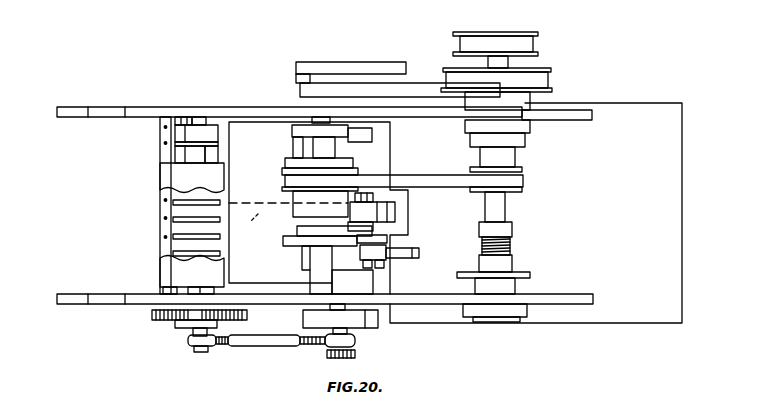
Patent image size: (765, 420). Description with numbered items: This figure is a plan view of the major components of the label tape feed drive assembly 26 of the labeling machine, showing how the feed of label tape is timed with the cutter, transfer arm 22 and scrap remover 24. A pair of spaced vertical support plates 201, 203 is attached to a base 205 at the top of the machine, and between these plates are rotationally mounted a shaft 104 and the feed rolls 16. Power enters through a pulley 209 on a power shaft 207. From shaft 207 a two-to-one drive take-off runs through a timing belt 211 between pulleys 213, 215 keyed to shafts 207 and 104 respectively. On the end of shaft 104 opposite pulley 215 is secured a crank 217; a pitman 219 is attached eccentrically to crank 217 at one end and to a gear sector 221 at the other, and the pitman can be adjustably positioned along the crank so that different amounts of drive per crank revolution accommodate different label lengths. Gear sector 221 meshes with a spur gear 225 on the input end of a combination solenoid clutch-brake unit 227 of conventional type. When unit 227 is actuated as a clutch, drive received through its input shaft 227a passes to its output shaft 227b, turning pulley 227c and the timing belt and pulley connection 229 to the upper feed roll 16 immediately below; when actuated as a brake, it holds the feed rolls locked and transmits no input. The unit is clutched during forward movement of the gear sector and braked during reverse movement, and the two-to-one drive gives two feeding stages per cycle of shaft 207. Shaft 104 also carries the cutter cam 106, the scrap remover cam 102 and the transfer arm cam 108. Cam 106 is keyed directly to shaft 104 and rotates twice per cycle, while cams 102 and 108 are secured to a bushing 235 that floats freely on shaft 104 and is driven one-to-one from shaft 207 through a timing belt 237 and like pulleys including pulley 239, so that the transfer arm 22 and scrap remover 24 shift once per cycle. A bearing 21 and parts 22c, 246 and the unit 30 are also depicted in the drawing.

The apparatus 26 is at (235, 7).
The vertical support plate 201 is at (166, 78).
The vertical support plate 203 is at (134, 305).
The base 205 is at (660, 137).
The power shaft 207 is at (500, 62).
The pulley 209 is at (530, 31).
The timing belt 211 is at (416, 48).
The pulley 213 is at (552, 70).
The pulley 215 is at (302, 45).
The crank 217 is at (357, 323).
The pitman 219 is at (283, 343).
The gear sector 221 is at (162, 320).
The spur gear 225 is at (205, 334).
The combination solenoid clutch-brake unit 227 is at (172, 162).
The input shaft 227a is at (208, 280).
The output shaft 227b is at (196, 118).
The pulley 227c is at (181, 118).
The timing belt and pulley connection 229 is at (186, 134).
The feed roll 16 is at (190, 154).
The carriage unit 30 is at (248, 131).
The shaft 104 is at (323, 152).
The cutter cam 106 is at (290, 163).
The transfer arm cam 108 is at (298, 232).
The scrap remover cam 102 is at (303, 245).
The bushing 235 is at (311, 194).
The timing belt 237 is at (450, 155).
The pulley 239 is at (358, 168).
The transfer arm 22 is at (396, 204).
The head plate 22c is at (378, 227).
The bar 246 is at (390, 240).
The scrap remover 24 is at (392, 259).
The bearing 21 is at (521, 170).